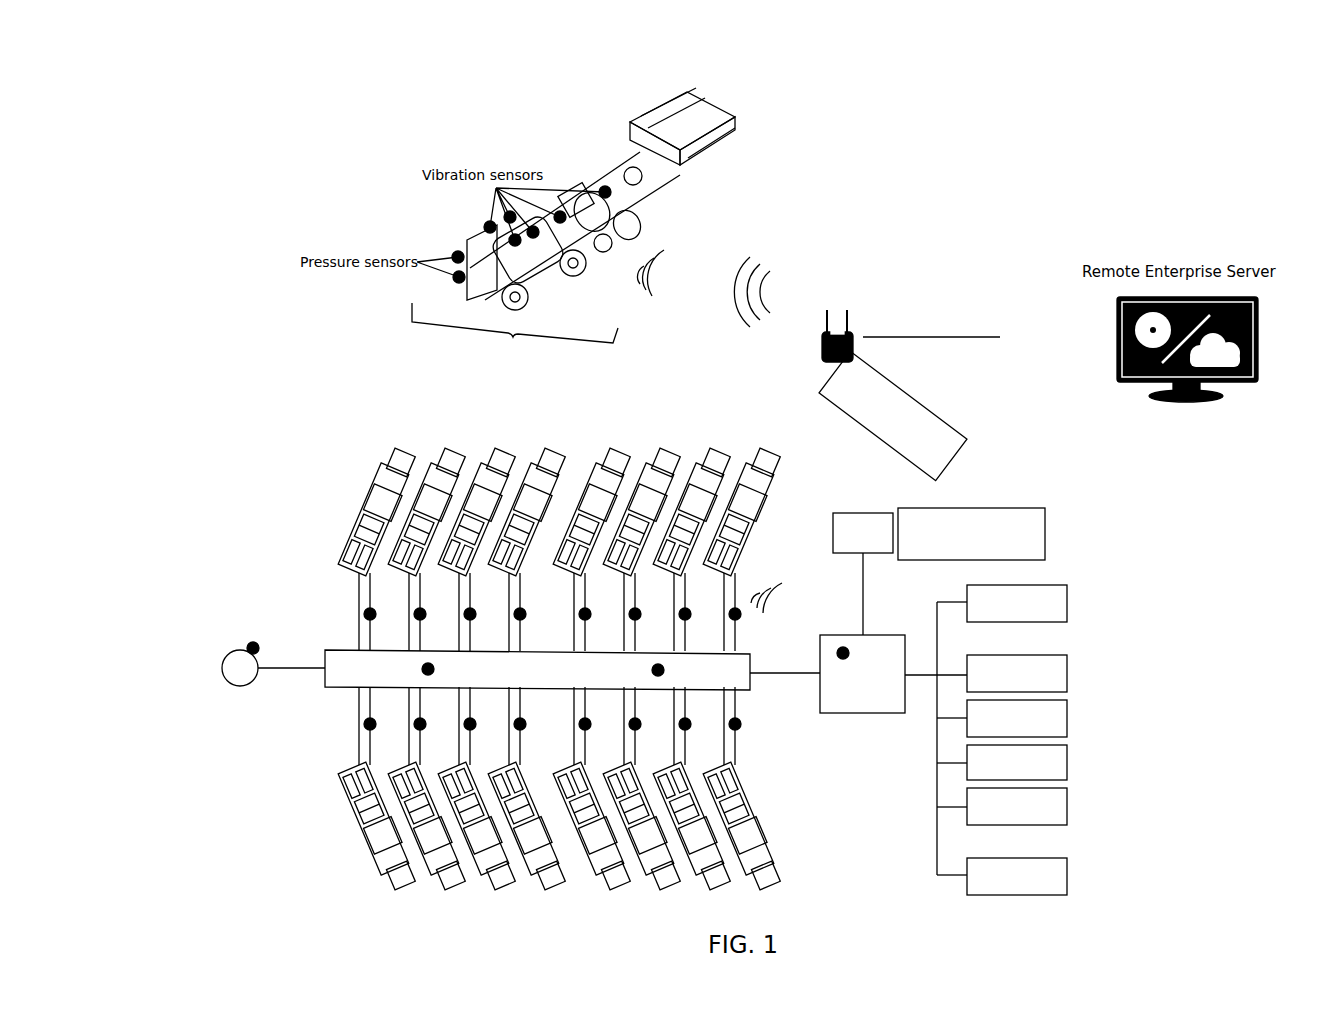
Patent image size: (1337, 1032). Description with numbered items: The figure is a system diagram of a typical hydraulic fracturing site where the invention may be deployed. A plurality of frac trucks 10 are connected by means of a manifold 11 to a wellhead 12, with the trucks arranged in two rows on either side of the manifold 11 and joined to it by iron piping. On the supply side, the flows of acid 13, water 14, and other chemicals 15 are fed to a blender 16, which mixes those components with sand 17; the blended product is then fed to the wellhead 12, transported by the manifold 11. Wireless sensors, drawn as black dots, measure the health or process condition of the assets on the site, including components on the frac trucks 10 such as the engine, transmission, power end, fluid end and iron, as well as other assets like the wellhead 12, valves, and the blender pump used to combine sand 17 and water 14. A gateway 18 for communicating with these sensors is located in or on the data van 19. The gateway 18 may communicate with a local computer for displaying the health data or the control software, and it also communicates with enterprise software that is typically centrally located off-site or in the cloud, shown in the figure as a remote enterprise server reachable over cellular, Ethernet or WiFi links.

The frac trucks 10 is at (513, 337).
The manifold 11 is at (537, 670).
The wellhead 12 is at (238, 689).
The acid 13 is at (1073, 601).
The water 14 is at (1068, 674).
The chemicals 15 is at (1070, 871).
The blender 16 is at (843, 715).
The sand 17 is at (1047, 531).
The gateway 18 is at (820, 343).
The data van 19 is at (943, 413).